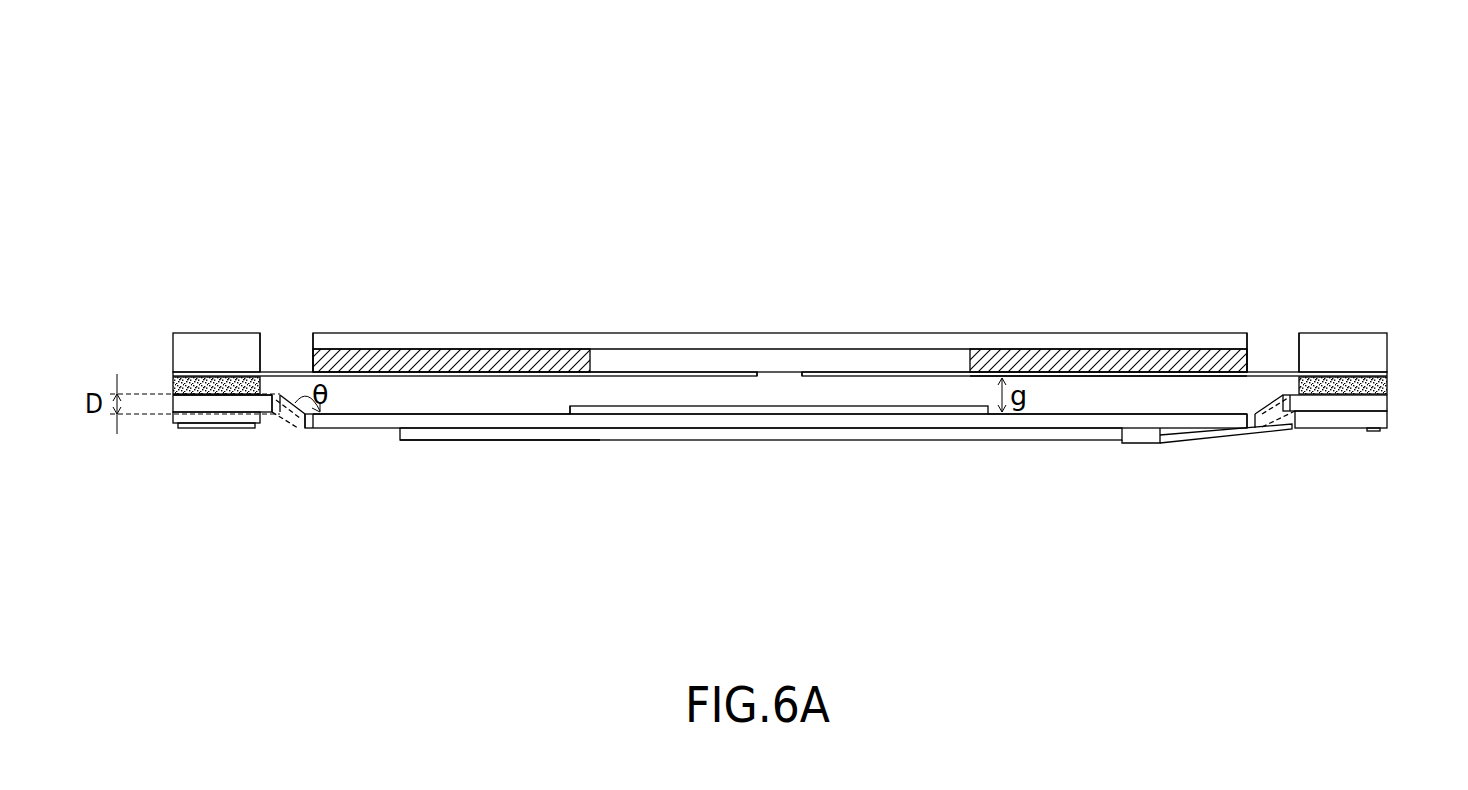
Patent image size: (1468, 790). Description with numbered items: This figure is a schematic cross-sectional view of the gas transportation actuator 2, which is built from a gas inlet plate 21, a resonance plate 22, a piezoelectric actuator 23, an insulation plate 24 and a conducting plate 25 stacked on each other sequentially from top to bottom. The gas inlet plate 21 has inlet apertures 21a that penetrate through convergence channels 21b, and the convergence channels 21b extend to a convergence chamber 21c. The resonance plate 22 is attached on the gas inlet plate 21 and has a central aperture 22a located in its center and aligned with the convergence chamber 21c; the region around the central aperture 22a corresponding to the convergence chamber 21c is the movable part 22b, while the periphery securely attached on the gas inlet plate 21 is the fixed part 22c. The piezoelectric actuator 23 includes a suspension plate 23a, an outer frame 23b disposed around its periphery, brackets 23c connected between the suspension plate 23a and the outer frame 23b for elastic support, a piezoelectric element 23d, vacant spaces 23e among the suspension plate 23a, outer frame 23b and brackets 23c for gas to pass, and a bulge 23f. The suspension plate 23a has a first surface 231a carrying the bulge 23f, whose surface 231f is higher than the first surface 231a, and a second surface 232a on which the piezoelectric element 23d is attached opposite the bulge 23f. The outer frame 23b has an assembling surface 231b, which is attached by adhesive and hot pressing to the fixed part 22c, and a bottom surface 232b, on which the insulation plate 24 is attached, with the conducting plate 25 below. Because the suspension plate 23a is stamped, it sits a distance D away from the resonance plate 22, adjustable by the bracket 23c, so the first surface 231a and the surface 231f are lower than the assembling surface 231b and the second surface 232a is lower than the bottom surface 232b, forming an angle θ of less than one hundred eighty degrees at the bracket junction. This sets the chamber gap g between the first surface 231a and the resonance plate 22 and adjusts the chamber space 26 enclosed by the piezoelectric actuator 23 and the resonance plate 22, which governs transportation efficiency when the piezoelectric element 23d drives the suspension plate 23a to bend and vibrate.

The gas transportation actuator 2 is at (1380, 83).
The gas inlet plate 21 is at (1340, 350).
The inlet aperture 21a is at (294, 320).
The convergence channel 21b is at (450, 352).
The convergence chamber 21c is at (692, 362).
The resonance plate 22 is at (1073, 270).
The central aperture 22a is at (788, 371).
The movable part 22b is at (910, 371).
The fixed part 22c is at (1049, 372).
The piezoelectric actuator 23 is at (1380, 409).
The suspension plate 23a is at (406, 429).
The outer frame 23b is at (201, 409).
The bracket 23c is at (277, 408).
The piezoelectric element 23d is at (487, 432).
The vacant space 23e is at (300, 427).
The bulge 23f is at (592, 423).
The first surface 231a is at (1016, 416).
The assembling surface 231b is at (166, 394).
The surface of the bulge 231f is at (624, 404).
The second surface 232a is at (772, 430).
The bottom surface 232b is at (172, 417).
The insulation plate 24 is at (1358, 417).
The conducting plate 25 is at (1380, 430).
The chamber space 26 is at (1098, 397).